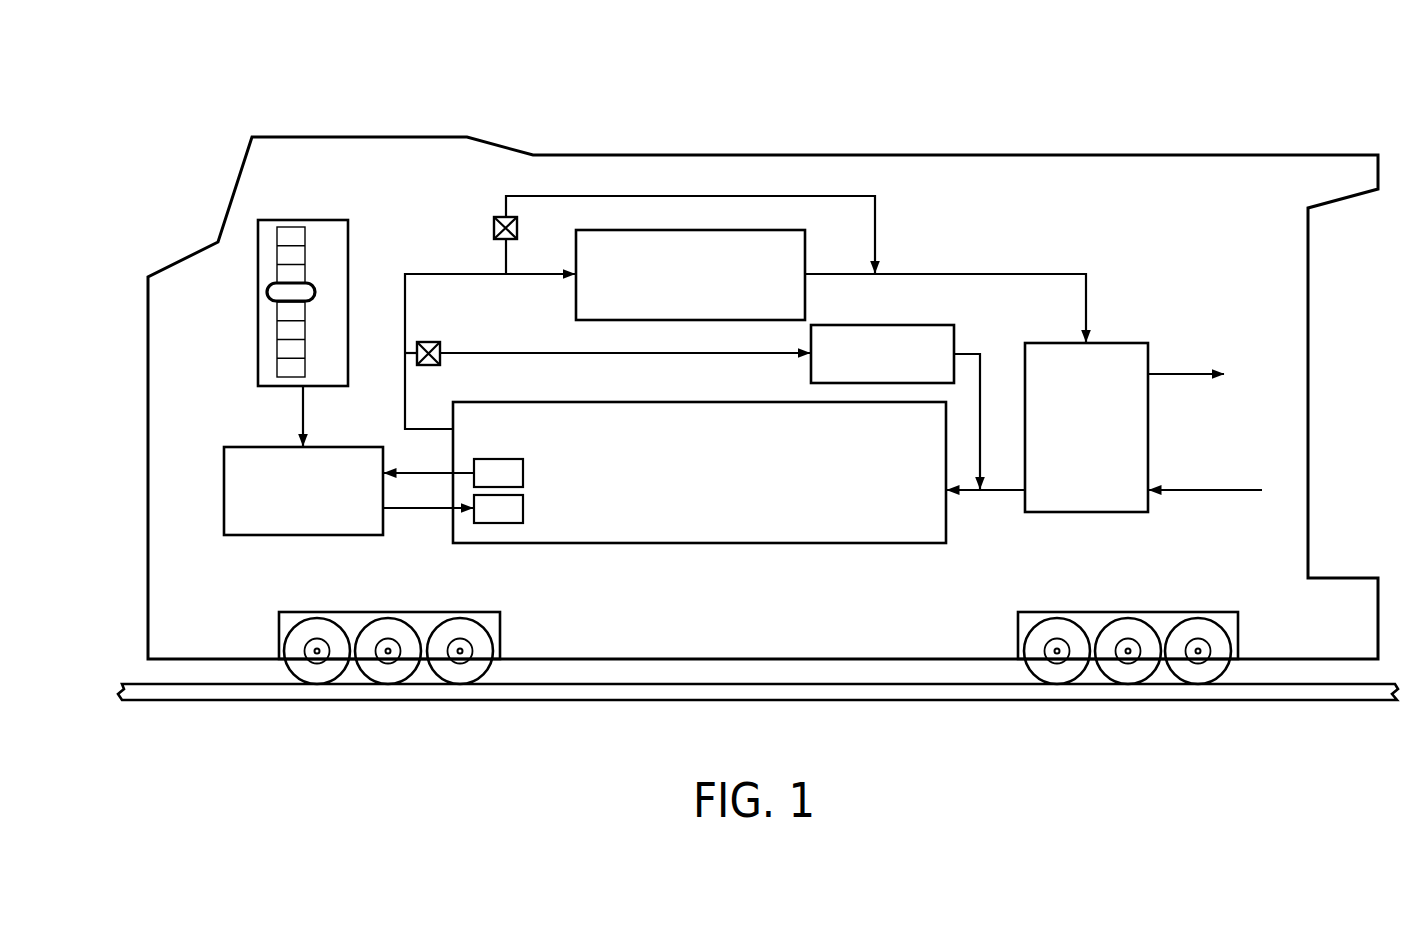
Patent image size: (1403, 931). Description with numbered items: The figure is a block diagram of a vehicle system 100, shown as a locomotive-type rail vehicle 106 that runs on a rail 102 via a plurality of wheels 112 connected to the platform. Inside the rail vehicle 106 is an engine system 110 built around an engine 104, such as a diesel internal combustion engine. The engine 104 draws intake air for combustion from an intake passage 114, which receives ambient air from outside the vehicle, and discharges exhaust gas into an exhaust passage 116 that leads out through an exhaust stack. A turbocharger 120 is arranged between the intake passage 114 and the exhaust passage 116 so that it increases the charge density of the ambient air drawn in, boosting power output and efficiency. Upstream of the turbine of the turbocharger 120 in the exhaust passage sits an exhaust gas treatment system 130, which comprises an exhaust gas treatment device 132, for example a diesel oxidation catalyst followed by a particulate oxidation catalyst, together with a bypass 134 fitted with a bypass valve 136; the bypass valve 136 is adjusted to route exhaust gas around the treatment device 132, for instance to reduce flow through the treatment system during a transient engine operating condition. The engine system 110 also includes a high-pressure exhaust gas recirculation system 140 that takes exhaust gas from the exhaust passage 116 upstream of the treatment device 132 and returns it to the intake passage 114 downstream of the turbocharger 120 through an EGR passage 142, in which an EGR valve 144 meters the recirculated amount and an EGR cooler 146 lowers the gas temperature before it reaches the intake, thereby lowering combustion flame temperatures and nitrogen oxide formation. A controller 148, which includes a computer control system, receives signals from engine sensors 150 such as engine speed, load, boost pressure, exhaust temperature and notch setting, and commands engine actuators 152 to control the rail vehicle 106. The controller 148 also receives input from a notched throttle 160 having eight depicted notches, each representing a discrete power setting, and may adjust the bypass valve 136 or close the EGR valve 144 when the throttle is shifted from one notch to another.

The vehicle system 100 is at (1212, 97).
The rail 102 is at (1308, 700).
The engine 104 is at (699, 472).
The rail vehicle 106 is at (1055, 155).
The engine system 110 is at (1097, 217).
The wheels 112 is at (483, 640).
The intake passage 114 is at (1183, 490).
The exhaust passage 116 is at (404, 405).
The turbocharger 120 is at (1145, 415).
The exhaust gas treatment system 130 is at (893, 205).
The exhaust gas treatment device 132 is at (690, 275).
The bypass 134 is at (700, 196).
The bypass valve 136 is at (494, 222).
The exhaust gas recirculation system 140 is at (965, 330).
The EGR passage 142 is at (490, 352).
The EGR valve 144 is at (430, 366).
The EGR cooler 146 is at (882, 354).
The controller 148 is at (303, 460).
The engine sensors 150 is at (453, 473).
The engine actuators 152 is at (453, 509).
The notched throttle 160 is at (350, 235).